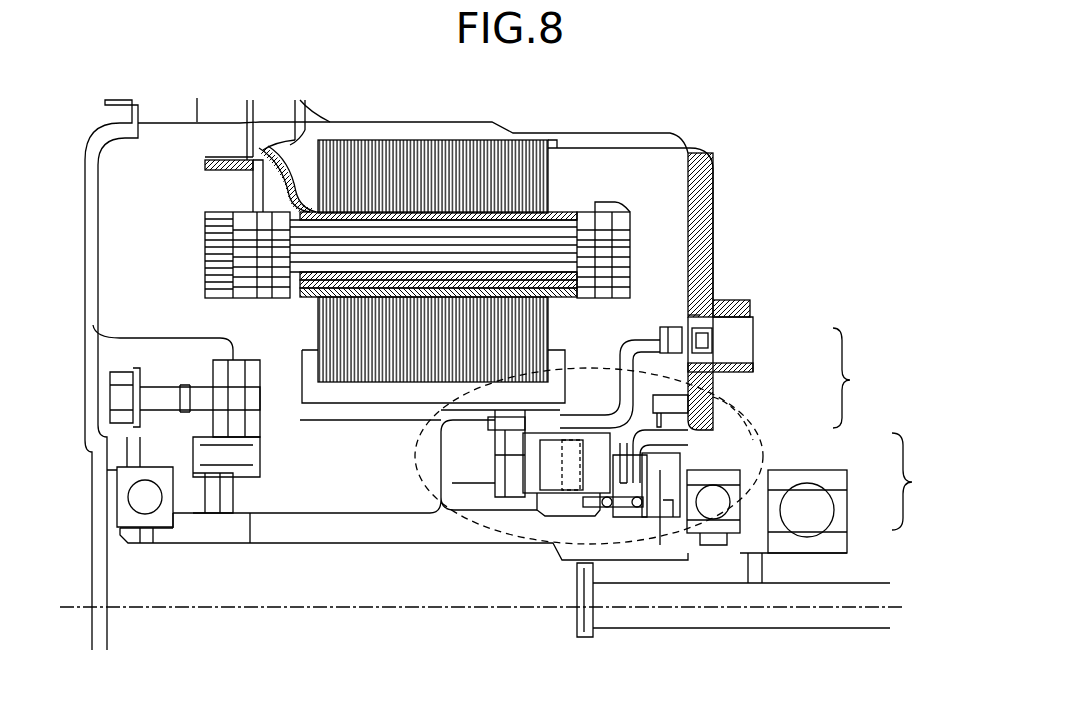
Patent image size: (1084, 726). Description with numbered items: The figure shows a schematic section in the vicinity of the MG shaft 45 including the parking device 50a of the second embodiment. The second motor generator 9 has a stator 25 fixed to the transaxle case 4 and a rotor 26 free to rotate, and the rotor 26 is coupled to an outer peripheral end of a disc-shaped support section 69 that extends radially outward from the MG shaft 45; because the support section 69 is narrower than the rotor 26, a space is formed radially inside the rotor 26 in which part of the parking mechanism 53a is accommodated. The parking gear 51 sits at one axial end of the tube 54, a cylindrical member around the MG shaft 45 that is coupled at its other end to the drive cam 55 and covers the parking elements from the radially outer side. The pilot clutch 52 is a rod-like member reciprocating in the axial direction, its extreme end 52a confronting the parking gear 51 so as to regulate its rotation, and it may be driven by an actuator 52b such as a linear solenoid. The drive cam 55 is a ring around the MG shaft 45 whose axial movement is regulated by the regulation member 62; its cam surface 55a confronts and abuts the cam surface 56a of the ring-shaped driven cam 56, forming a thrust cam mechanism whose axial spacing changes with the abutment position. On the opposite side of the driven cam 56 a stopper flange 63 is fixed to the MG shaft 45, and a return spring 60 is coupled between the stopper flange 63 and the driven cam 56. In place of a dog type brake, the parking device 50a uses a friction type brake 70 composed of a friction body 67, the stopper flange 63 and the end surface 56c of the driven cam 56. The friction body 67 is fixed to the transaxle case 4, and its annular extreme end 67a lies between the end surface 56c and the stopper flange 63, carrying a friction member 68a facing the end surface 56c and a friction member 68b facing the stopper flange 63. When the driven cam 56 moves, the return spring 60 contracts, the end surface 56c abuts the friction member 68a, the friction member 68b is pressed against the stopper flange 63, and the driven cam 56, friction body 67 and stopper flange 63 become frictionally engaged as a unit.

The transaxle case 4 is at (633, 147).
The second motor generator 9 is at (486, 139).
The stator 25 is at (419, 150).
The rotor 26 is at (330, 328).
The MG shaft 45 is at (298, 527).
The parking device 50a is at (865, 378).
The parking gear 51 is at (730, 372).
The pilot clutch 52 is at (705, 341).
The extreme end 52a is at (687, 313).
The actuator 52b is at (733, 300).
The parking mechanism 53a is at (717, 400).
The tube 54 is at (600, 425).
The drive cam 55 is at (452, 483).
The cam surface 55a is at (507, 470).
The driven cam 56 is at (552, 502).
The cam surface 56a is at (566, 447).
The end surface 56c is at (653, 485).
The return spring 60 is at (613, 508).
The regulation member 62 is at (447, 490).
The stopper flange 63 is at (673, 490).
The friction body 67 is at (690, 437).
The extreme end 67a is at (627, 453).
The friction member 68a is at (612, 508).
The friction member 68b is at (638, 508).
The support section 69 is at (412, 418).
The friction type brake 70 is at (917, 481).